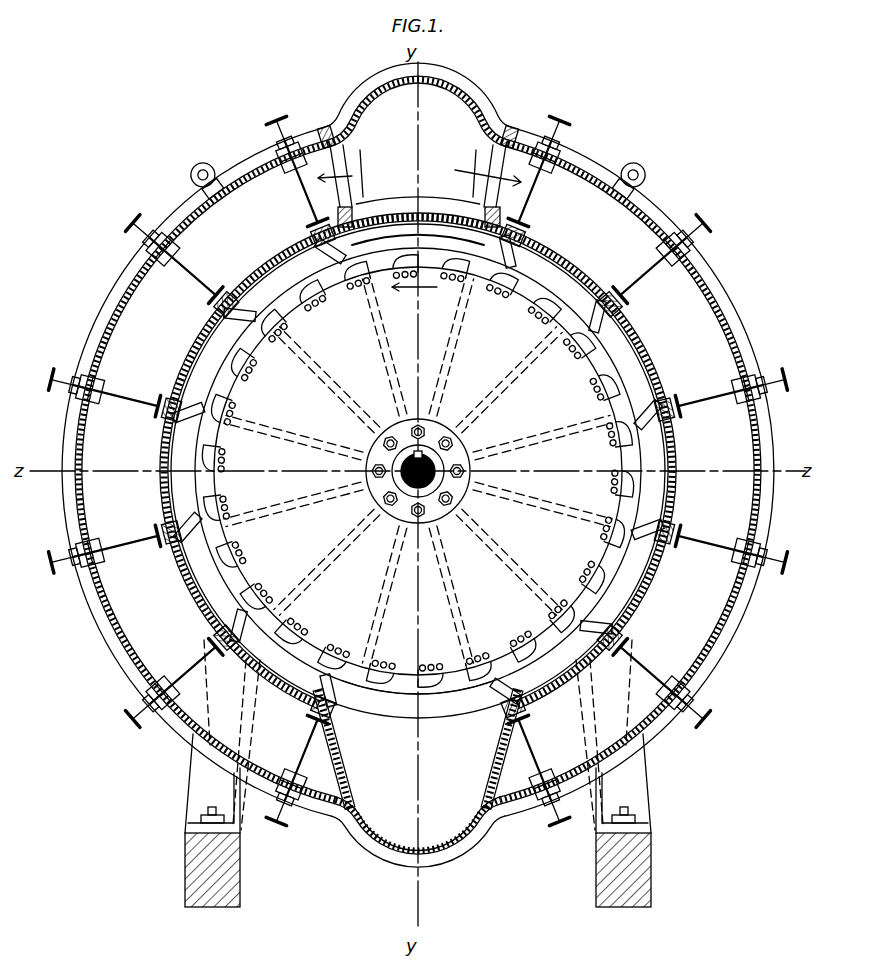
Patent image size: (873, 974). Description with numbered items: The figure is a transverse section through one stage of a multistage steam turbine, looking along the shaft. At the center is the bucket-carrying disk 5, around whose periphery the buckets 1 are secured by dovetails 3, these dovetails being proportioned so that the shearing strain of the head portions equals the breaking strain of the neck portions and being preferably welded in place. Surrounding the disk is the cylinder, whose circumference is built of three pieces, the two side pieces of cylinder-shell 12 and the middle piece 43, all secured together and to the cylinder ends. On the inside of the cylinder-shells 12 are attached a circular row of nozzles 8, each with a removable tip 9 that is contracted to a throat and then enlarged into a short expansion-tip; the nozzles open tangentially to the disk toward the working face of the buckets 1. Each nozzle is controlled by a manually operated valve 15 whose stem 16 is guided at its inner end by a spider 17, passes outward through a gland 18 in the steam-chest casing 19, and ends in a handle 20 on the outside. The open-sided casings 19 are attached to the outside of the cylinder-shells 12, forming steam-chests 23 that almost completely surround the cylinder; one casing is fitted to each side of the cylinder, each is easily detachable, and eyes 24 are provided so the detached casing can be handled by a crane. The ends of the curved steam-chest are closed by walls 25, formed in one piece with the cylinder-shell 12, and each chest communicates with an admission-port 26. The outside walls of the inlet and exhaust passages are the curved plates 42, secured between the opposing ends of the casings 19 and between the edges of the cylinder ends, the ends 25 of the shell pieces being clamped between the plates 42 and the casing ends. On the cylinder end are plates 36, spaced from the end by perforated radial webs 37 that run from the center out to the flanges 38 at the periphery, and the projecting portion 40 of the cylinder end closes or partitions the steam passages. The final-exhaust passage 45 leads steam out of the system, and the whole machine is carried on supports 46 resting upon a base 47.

The buckets 1 is at (604, 354).
The dovetail attachment 3 is at (600, 396).
The disk 5 is at (418, 471).
The nozzle 8 is at (190, 508).
The removable tip 9 is at (243, 345).
The cylinder-shell 12 is at (178, 348).
The valve 15 is at (206, 296).
The valve stem 16 is at (195, 268).
The spider 17 is at (241, 300).
The gland 18 is at (161, 236).
The steam-chest casing 19 is at (100, 310).
The handle 20 is at (128, 216).
The steam-chest 23 is at (418, 471).
The eyes 24 is at (205, 160).
The walls 25 is at (345, 768).
The admission-port 26 is at (419, 166).
The plates 36 is at (428, 252).
The perforated radial webs 37 is at (355, 228).
The flanges 38 is at (180, 380).
The projecting portion 40 is at (418, 732).
The passage-walls 42 is at (480, 95).
The middle piece 43 is at (378, 203).
The final-exhaust passage 45 is at (450, 845).
The supports 46 is at (200, 786).
The base 47 is at (185, 880).